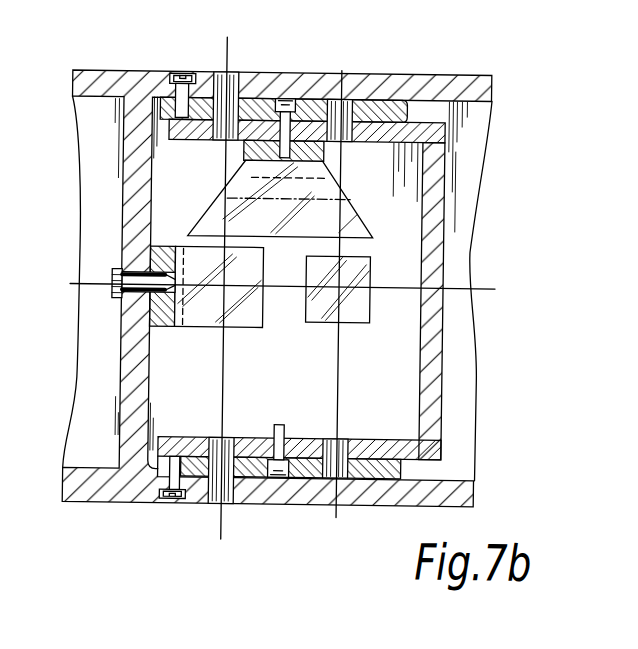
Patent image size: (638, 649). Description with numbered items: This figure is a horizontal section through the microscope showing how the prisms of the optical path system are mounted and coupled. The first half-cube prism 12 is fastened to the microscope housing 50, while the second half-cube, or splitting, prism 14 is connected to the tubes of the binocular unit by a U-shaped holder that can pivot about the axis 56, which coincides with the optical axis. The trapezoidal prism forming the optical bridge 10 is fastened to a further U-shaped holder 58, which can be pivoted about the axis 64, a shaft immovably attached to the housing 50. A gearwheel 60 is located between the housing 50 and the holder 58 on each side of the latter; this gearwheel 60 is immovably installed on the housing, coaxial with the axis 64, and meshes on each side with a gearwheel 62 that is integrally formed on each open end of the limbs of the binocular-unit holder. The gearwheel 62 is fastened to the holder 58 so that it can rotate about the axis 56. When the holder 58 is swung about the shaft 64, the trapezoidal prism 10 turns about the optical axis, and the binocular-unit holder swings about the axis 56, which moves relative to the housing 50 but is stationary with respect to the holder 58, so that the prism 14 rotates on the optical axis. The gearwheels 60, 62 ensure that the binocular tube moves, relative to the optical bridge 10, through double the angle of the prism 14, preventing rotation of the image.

The optical bridge 10 is at (342, 211).
The first half-cube prism 12 is at (247, 329).
The second half-cube prism 14 is at (360, 320).
The microscope housing 50 is at (129, 93).
The axis 56 is at (345, 103).
The U-shaped holder 58 is at (433, 194).
The gearwheel 60 is at (258, 103).
The gearwheel 62 is at (380, 112).
The axis 64 is at (224, 93).